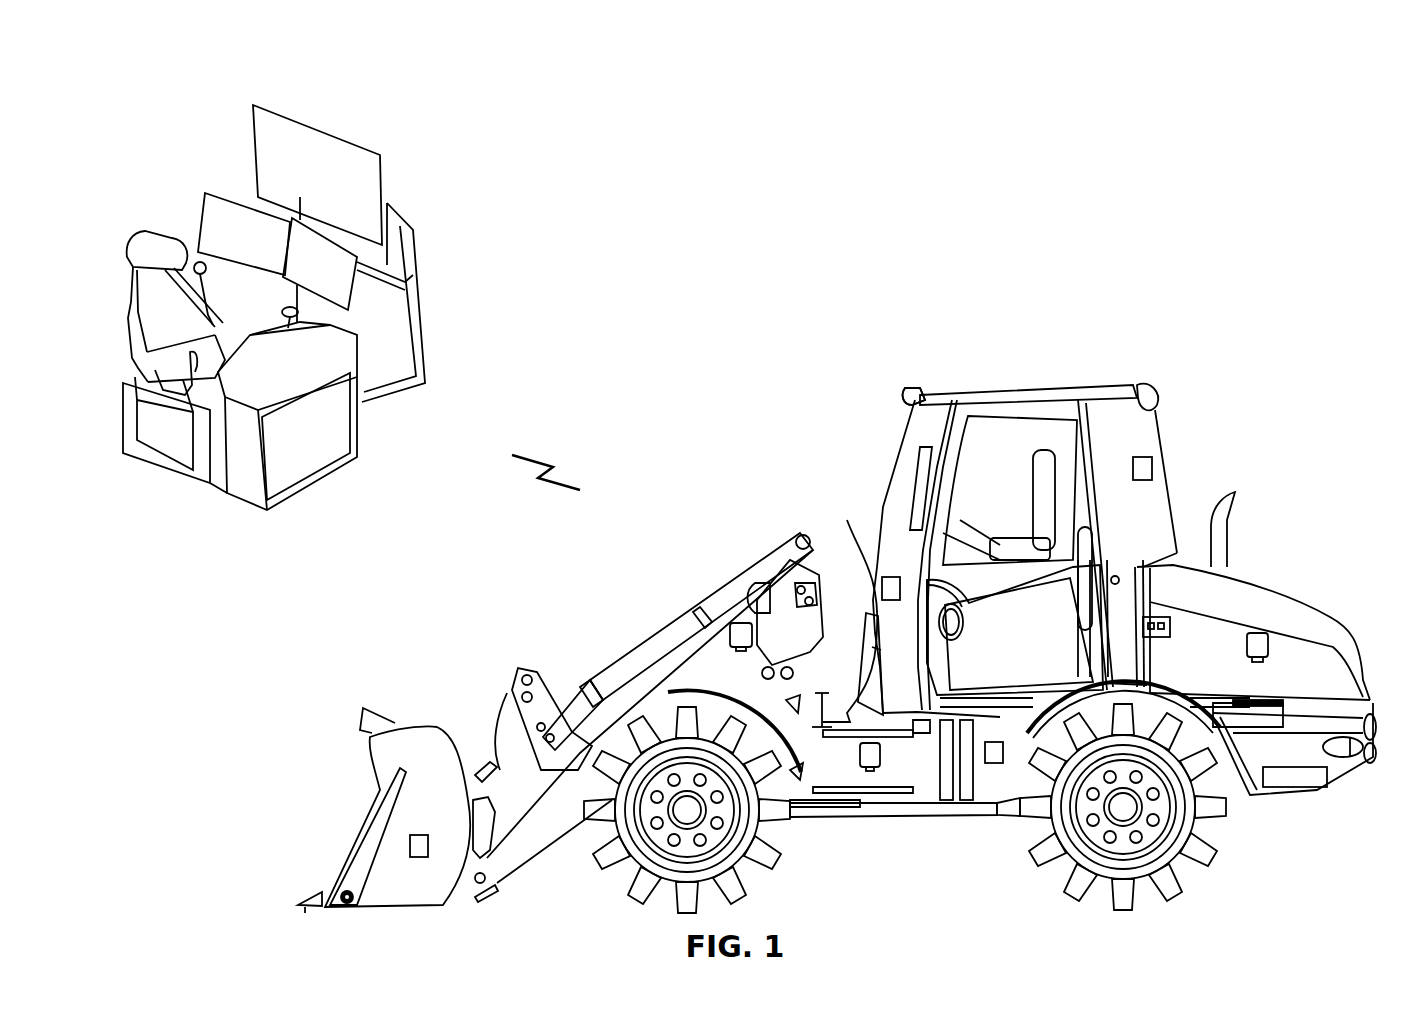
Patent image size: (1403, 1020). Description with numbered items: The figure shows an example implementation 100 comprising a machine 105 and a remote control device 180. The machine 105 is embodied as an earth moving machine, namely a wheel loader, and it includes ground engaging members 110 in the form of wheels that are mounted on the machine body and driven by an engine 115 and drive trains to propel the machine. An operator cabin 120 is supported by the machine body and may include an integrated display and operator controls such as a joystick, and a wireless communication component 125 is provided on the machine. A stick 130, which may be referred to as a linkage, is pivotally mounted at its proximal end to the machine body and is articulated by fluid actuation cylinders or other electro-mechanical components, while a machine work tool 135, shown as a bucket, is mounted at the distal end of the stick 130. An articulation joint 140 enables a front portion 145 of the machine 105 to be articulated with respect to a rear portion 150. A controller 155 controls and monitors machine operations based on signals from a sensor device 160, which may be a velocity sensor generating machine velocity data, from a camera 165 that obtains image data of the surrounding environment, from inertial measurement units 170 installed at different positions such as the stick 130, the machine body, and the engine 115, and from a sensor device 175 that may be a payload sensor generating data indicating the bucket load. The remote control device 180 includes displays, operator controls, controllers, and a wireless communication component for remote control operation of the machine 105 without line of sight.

The example implementation 100 is at (252, 65).
The machine 105 is at (775, 433).
The ground engaging members 110 is at (748, 872).
The engine 115 is at (1222, 685).
The operator cabin 120 is at (988, 457).
The wireless communication component 125 is at (1153, 467).
The stick 130 is at (620, 660).
The machine work tool 135 is at (413, 907).
The articulation joint 140 is at (819, 745).
The front portion 145 is at (457, 655).
The rear portion 150 is at (1190, 340).
The controller 155 is at (880, 578).
The sensor device 160 is at (997, 775).
The camera 165 is at (910, 388).
The inertial measurement units 170 is at (730, 635).
The sensor device 175 is at (408, 847).
The remote control device 180 is at (222, 515).